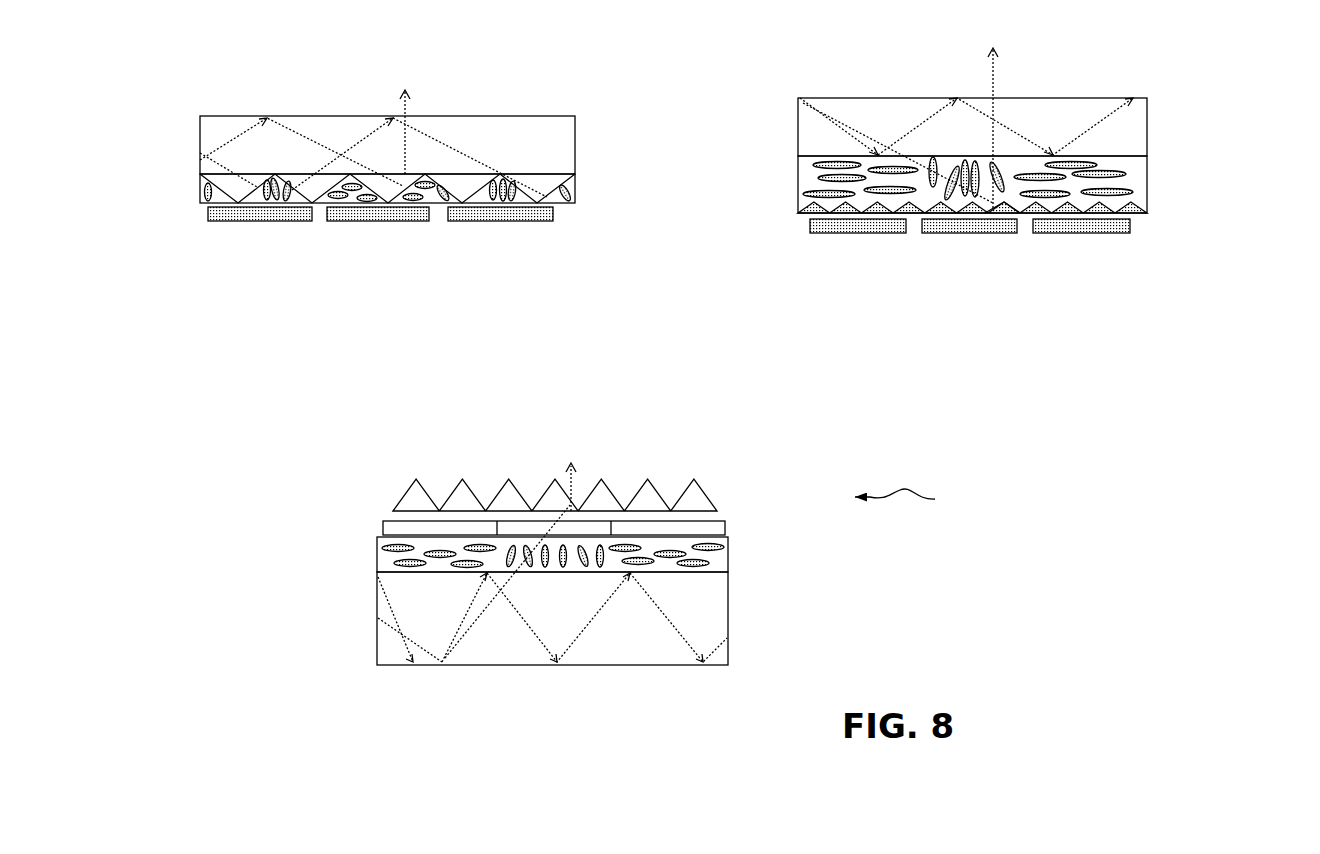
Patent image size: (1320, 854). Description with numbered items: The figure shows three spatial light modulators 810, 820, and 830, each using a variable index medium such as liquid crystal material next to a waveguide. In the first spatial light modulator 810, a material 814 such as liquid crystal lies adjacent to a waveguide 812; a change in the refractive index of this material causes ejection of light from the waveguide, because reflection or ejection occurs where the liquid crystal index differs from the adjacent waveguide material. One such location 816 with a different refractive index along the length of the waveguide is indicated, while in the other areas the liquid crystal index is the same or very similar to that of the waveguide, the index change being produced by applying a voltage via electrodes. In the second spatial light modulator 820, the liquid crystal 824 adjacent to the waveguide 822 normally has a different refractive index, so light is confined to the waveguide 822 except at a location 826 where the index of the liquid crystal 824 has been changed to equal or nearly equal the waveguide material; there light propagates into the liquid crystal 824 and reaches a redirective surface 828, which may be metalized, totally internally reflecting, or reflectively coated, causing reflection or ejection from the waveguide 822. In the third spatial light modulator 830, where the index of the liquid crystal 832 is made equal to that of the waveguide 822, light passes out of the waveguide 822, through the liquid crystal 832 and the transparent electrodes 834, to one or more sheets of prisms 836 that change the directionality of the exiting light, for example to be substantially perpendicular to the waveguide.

The spatial light modulator 810 is at (303, 60).
The waveguide 812 is at (526, 113).
The material 814 is at (583, 188).
The location with a different refractive index 816 is at (419, 178).
The spatial light modulator 820 is at (898, 31).
The waveguide 822 is at (1115, 96).
The liquid crystal 824 is at (1150, 175).
The location of equal refractive index 826 is at (998, 161).
The redirective surface 828 is at (1001, 205).
The spatial light modulator 830 is at (489, 379).
The liquid crystal 832 is at (850, 553).
The transparent electrodes 834 is at (921, 525).
The sheets of prisms 836 is at (964, 293).